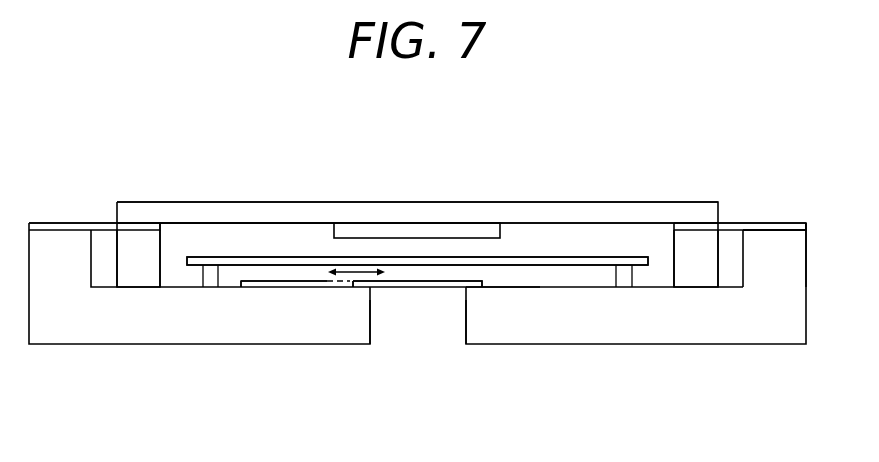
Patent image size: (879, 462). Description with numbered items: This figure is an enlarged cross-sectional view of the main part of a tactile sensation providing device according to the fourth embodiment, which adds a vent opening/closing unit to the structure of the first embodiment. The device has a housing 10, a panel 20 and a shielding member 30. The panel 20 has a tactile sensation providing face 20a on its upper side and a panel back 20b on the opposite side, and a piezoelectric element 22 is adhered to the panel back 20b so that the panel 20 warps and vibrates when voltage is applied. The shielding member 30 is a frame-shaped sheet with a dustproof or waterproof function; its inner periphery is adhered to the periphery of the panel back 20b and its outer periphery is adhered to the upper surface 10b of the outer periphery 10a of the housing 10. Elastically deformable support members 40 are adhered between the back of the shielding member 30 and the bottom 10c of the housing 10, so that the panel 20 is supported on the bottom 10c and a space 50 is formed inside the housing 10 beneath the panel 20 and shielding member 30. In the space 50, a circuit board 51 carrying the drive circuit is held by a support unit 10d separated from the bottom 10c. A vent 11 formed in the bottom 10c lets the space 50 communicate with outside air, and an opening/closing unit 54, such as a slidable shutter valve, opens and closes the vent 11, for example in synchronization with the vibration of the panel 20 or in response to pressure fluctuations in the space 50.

The housing 10 is at (769, 349).
The outer periphery 10a is at (795, 237).
The upper surface 10b is at (751, 229).
The bottom 10c is at (501, 285).
The support unit 10d is at (211, 283).
The vent 11 is at (371, 333).
The panel 20 is at (508, 212).
The tactile sensation providing face 20a is at (236, 202).
The panel back 20b is at (264, 222).
The piezoelectric element 22 is at (407, 232).
The shielding member 30 is at (73, 222).
The support member 40 is at (137, 280).
The space 50 is at (198, 236).
The circuit board 51 is at (572, 257).
The opening/closing unit 54 is at (417, 285).